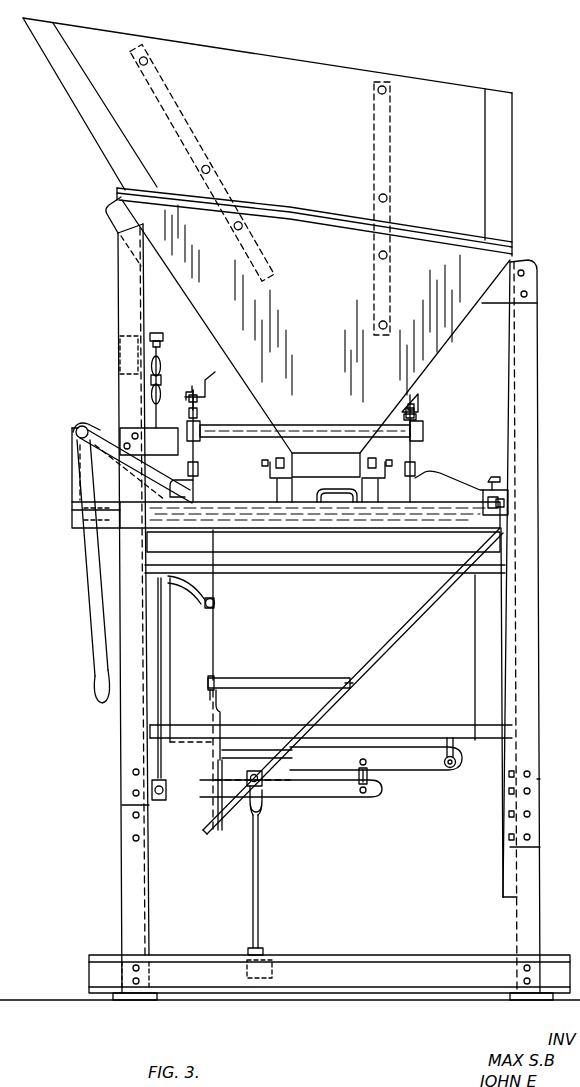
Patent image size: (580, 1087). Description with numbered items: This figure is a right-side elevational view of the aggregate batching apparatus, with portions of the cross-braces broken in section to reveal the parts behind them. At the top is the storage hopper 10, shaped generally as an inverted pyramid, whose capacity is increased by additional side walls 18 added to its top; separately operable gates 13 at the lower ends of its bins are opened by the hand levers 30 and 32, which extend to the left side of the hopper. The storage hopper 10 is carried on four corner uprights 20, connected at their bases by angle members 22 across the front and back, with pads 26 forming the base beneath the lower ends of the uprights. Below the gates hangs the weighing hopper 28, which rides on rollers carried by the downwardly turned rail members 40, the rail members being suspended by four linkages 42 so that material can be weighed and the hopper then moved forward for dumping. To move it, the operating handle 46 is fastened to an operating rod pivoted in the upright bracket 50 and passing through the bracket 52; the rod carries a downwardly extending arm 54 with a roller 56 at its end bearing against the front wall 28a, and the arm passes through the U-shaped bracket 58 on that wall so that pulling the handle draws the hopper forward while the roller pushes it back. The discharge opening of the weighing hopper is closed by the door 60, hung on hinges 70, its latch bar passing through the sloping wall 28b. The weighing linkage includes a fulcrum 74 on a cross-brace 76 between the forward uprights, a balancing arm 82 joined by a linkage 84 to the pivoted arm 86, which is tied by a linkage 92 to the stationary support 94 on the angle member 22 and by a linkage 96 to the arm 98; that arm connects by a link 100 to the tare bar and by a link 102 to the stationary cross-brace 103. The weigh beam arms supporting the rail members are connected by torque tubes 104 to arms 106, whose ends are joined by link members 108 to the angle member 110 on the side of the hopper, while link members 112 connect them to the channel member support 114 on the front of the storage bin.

The storage hopper 10 is at (321, 341).
The gates 13 is at (327, 465).
The additional side walls 18 is at (98, 133).
The corner uprights 20 is at (121, 865).
The angle members 22 is at (191, 960).
The pads 26 is at (128, 1006).
The weighing hopper 28 is at (378, 656).
The front wall 28a is at (213, 662).
The sloping wall 28b is at (207, 836).
The hand lever 30 is at (337, 500).
The hand lever 32 is at (276, 492).
The rail members 40 is at (273, 540).
The linkages 42 is at (198, 471).
The operating handle 46 is at (90, 642).
The upright bracket 50 is at (74, 483).
The bracket 52 is at (100, 432).
The arm 54 is at (186, 605).
The roller 56 is at (215, 608).
The U-shaped bracket 58 is at (204, 548).
The door 60 is at (215, 770).
The hinges 70 is at (210, 690).
The fulcrum 74 is at (150, 338).
The cross-brace 76 is at (120, 357).
The balancing arm 82 is at (150, 386).
The linkage 84 is at (158, 718).
The pivoted arm 86 is at (303, 806).
The linkage 92 is at (258, 900).
The stationary support 94 is at (275, 975).
The linkage 96 is at (366, 778).
The arm 98 is at (426, 770).
The link 100 is at (455, 757).
The link 102 is at (292, 752).
The stationary cross-brace 103 is at (396, 730).
The torque tubes 104 is at (330, 429).
The arms 106 is at (187, 433).
The link members 108 is at (420, 419).
The angle member 110 is at (418, 398).
The link members 112 is at (196, 418).
The channel member support 114 is at (205, 397).